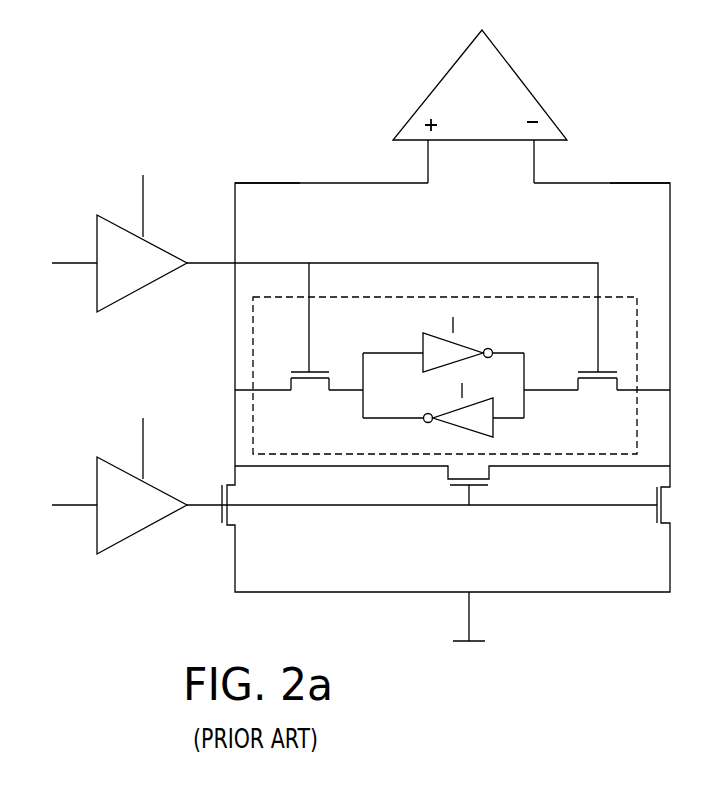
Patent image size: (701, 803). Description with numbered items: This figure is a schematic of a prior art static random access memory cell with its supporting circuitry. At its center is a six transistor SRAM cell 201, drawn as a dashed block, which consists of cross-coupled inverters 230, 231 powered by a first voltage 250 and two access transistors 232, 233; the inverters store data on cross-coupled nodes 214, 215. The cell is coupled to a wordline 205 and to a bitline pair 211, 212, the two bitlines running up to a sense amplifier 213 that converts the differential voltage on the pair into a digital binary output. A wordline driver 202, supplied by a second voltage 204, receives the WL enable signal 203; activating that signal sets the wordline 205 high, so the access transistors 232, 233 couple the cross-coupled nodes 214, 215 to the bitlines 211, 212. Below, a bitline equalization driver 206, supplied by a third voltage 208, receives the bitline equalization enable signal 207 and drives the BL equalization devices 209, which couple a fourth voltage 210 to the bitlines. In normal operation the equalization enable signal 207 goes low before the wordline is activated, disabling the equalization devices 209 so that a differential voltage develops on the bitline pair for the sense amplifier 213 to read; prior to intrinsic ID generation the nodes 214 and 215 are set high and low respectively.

The six transistor SRAM cell 201 is at (293, 439).
The wordline driver 202 is at (143, 288).
The WL enable signal 203 is at (64, 264).
The second voltage 204 is at (143, 222).
The wordline 205 is at (472, 263).
The bitline equalization driver 206 is at (143, 530).
The bitline equalization enable signal 207 is at (64, 506).
The third voltage 208 is at (143, 464).
The BL equalization devices 209 is at (655, 518).
The fourth voltage 210 is at (480, 641).
The bitline 211 is at (265, 184).
The bitline 212 is at (645, 184).
The sense amplifier 213 is at (523, 82).
The cross-coupled node 214 is at (363, 398).
The cross-coupled node 215 is at (524, 398).
The cross-coupled inverter 230 is at (423, 342).
The cross-coupled inverter 231 is at (460, 426).
The access transistor 232 is at (318, 372).
The access transistor 233 is at (580, 372).
The first voltage 250 is at (453, 326).